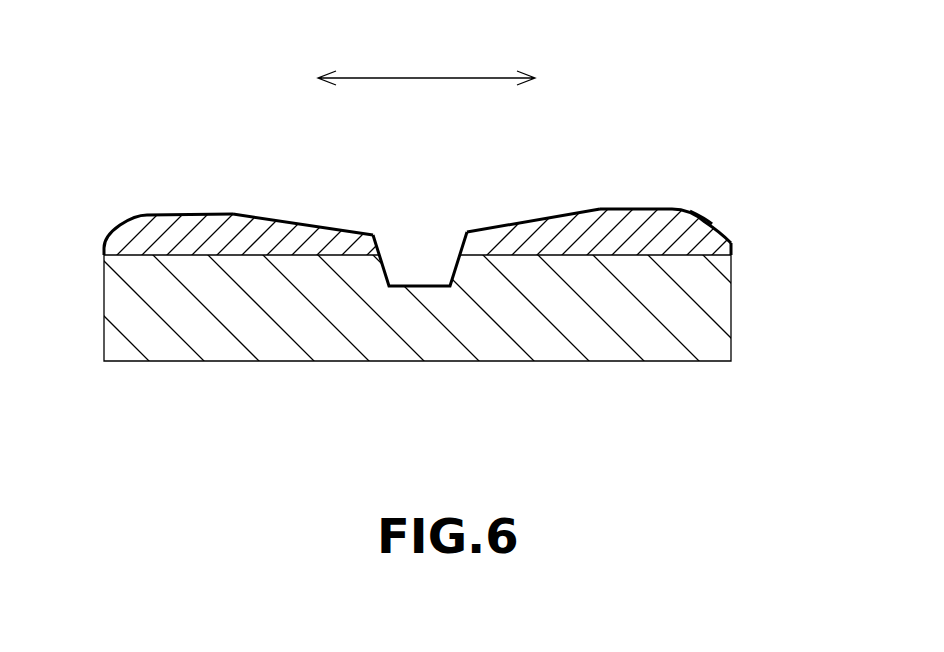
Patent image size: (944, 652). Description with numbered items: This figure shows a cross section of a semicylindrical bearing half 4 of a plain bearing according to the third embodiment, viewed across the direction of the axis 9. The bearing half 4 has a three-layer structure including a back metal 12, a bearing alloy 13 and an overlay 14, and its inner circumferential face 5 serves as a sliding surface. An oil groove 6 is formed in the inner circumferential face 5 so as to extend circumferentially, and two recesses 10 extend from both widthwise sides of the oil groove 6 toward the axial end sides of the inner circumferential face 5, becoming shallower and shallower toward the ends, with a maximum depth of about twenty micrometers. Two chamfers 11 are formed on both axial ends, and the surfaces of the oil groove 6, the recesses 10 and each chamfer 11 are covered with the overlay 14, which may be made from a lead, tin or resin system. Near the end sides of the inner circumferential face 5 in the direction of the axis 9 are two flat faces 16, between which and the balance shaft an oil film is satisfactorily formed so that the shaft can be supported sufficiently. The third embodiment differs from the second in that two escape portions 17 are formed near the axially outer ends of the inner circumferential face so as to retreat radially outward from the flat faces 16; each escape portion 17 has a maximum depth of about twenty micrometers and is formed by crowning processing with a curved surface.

The bearing half 4 is at (432, 343).
The inner circumferential face 5 is at (421, 197).
The oil groove 6 is at (447, 260).
The axis 9 is at (430, 78).
The recess 10 is at (575, 213).
The chamfer 11 is at (730, 233).
The back metal 12 is at (712, 339).
The bearing alloy 13 is at (733, 262).
The overlay 14 is at (712, 222).
The flat face 16 is at (645, 208).
The escape portion 17 is at (706, 210).